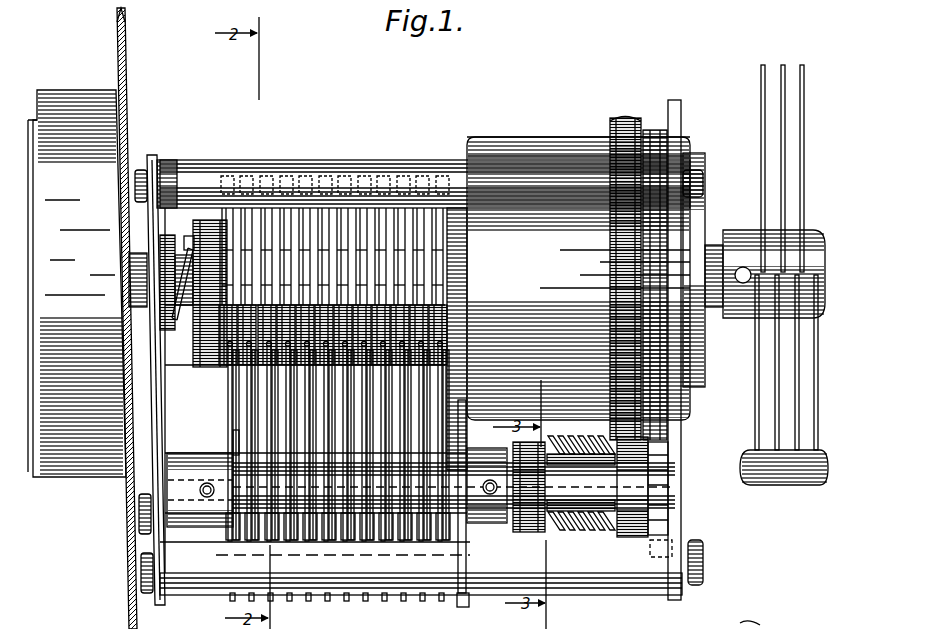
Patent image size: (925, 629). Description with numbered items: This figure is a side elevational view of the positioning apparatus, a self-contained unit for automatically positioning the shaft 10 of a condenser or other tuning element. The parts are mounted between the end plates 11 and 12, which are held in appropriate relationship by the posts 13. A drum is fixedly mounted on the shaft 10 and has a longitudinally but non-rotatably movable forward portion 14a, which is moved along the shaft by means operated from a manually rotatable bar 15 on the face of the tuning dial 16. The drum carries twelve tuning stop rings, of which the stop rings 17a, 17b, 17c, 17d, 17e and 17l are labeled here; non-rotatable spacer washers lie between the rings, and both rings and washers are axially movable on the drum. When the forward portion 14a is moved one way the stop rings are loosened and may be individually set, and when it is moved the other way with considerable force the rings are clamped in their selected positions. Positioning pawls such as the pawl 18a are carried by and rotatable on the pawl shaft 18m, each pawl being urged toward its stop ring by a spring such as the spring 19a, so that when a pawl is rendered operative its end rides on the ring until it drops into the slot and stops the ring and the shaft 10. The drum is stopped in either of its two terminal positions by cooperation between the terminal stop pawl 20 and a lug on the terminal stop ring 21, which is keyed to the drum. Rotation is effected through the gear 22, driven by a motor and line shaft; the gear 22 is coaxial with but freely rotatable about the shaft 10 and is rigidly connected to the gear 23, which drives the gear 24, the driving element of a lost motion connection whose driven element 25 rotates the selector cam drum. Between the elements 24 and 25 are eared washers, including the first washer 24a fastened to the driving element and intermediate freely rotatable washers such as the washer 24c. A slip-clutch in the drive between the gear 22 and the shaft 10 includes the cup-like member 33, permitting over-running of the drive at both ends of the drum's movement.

The shaft 10 is at (190, 330).
The end plate 11 is at (153, 158).
The end plate 12 is at (676, 132).
The post 13 is at (495, 170).
The forward portion of drum 14a is at (213, 352).
The manually rotatable bar 15 is at (31, 118).
The tuning dial 16 is at (81, 108).
The tuning stop ring 17a is at (229, 185).
The tuning stop ring 17b is at (247, 205).
The tuning stop ring 17c is at (266, 205).
The tuning stop ring 17d is at (303, 205).
The tuning stop ring 17e is at (321, 205).
The tuning stop ring 17l is at (438, 200).
The tuning positioning pawl 18a is at (216, 555).
The pawl shaft 18m is at (632, 478).
The spring 19a is at (232, 437).
The terminal stop pawl 20 is at (462, 607).
The terminal stop ring 21 is at (452, 212).
The gear 22 is at (621, 120).
The gear 23 is at (651, 132).
The gear 24 is at (658, 441).
The eared washer 24a is at (620, 540).
The eared washer 24c is at (596, 540).
The driven element 25 is at (540, 533).
The cup-like member 33 is at (551, 150).